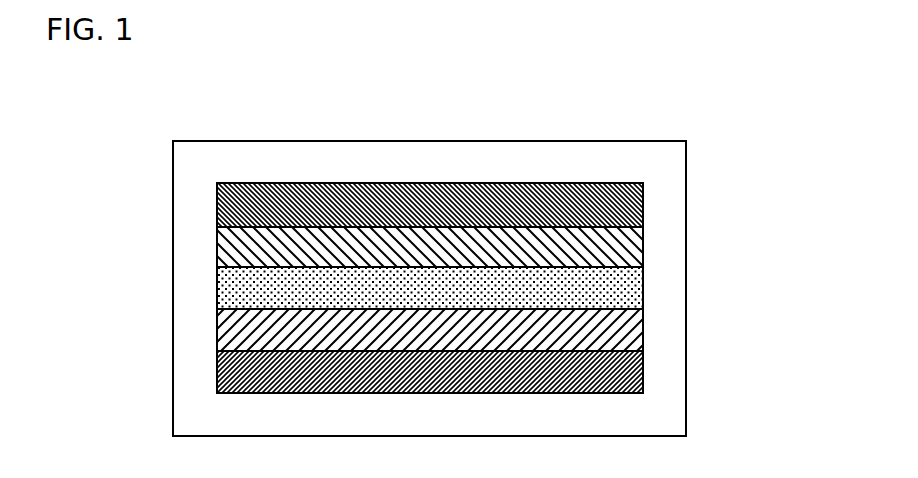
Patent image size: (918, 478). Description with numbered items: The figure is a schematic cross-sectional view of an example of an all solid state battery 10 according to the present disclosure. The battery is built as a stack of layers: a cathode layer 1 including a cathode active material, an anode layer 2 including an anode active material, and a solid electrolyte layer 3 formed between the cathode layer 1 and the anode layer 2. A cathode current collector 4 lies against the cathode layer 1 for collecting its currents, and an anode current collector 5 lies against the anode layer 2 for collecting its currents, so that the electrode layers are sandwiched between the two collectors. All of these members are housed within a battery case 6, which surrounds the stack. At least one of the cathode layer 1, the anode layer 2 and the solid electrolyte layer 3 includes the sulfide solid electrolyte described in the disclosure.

The all solid state battery 10 is at (668, 95).
The battery case 6 is at (662, 152).
The cathode current collector 4 is at (643, 190).
The cathode layer 1 is at (630, 237).
The solid electrolyte layer 3 is at (630, 279).
The anode layer 2 is at (630, 321).
The anode current collector 5 is at (630, 364).